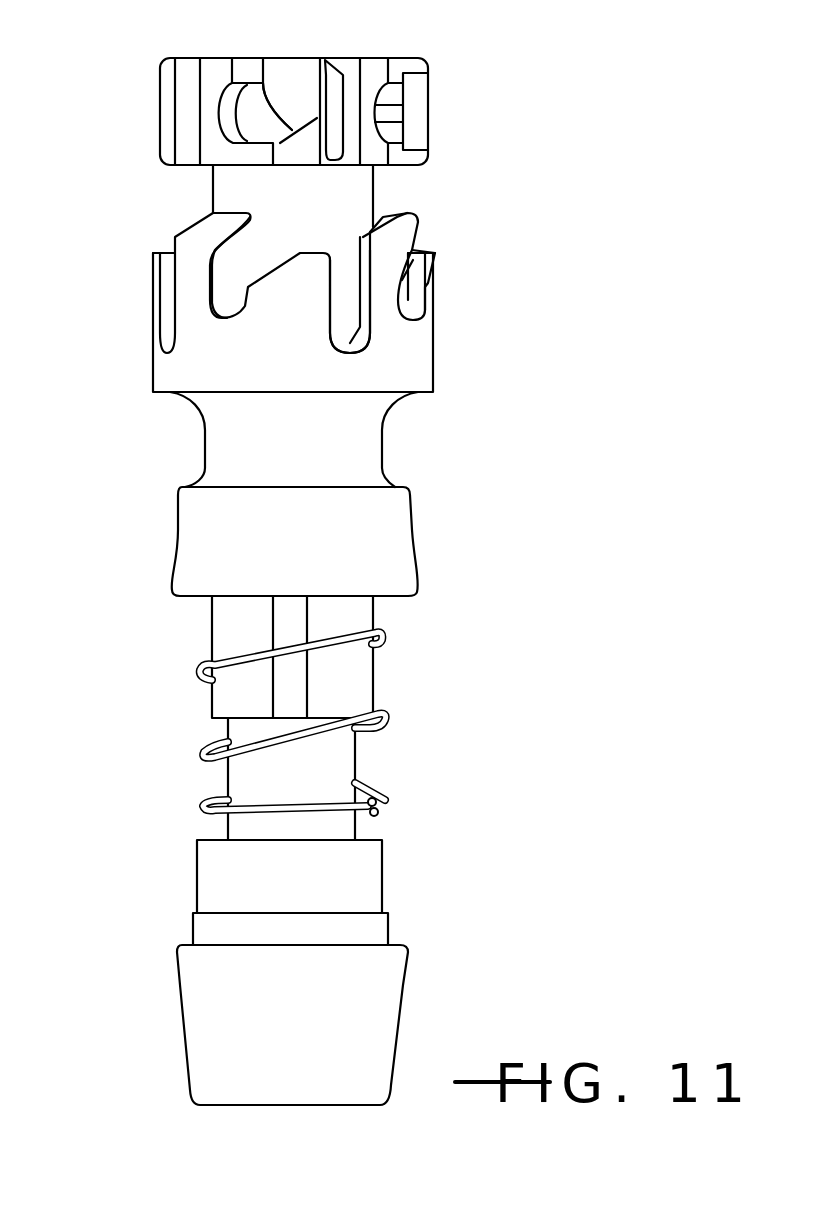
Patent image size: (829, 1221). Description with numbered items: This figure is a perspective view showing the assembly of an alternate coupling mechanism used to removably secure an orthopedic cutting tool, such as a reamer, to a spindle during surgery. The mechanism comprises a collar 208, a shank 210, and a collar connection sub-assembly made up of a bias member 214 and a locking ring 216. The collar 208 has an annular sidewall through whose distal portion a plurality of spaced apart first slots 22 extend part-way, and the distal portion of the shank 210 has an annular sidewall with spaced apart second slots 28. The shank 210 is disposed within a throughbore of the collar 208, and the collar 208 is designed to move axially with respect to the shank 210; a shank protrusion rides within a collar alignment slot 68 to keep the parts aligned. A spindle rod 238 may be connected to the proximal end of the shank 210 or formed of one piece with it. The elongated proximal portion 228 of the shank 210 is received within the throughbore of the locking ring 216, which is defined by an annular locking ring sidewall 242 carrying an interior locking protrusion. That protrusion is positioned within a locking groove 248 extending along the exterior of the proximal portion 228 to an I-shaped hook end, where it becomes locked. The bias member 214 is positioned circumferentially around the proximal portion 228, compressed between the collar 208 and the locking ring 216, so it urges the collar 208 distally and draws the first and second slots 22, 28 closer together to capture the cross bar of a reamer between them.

The first slots 22 is at (222, 295).
The second slots 28 is at (284, 108).
The collar alignment slot 68 is at (347, 322).
The collar 208 is at (185, 552).
The shank 210 is at (213, 183).
The bias member 214 is at (382, 800).
The locking ring 216 is at (378, 882).
The elongated proximal portion 228 is at (215, 619).
The spindle rod 238 is at (343, 770).
The annular locking ring sidewall 242 is at (205, 1012).
The locking groove 248 is at (287, 680).